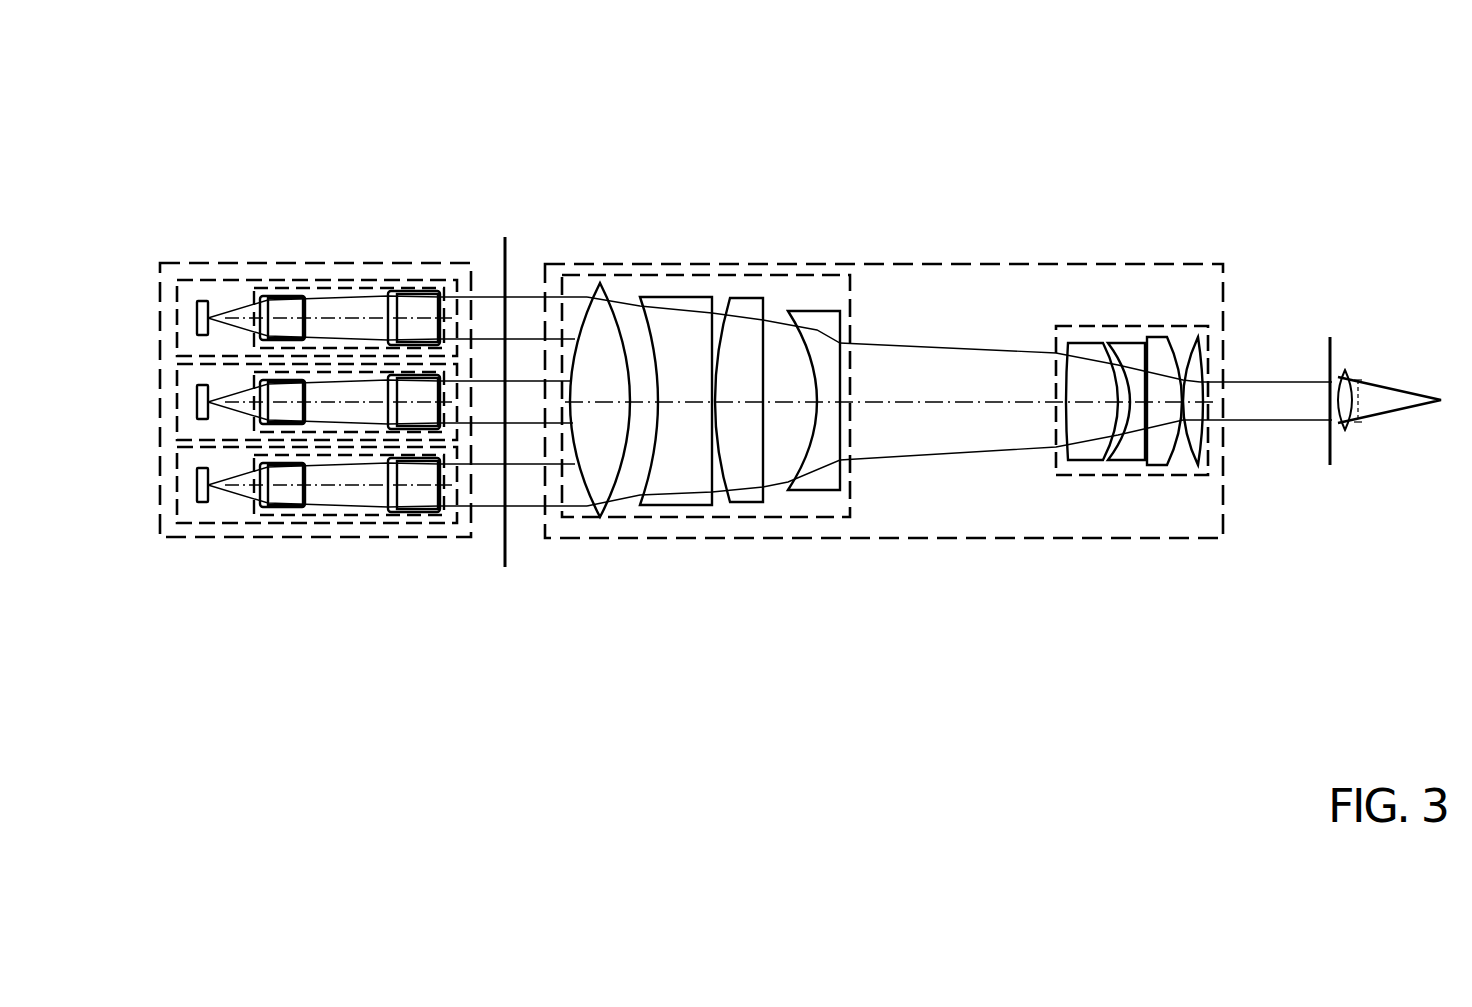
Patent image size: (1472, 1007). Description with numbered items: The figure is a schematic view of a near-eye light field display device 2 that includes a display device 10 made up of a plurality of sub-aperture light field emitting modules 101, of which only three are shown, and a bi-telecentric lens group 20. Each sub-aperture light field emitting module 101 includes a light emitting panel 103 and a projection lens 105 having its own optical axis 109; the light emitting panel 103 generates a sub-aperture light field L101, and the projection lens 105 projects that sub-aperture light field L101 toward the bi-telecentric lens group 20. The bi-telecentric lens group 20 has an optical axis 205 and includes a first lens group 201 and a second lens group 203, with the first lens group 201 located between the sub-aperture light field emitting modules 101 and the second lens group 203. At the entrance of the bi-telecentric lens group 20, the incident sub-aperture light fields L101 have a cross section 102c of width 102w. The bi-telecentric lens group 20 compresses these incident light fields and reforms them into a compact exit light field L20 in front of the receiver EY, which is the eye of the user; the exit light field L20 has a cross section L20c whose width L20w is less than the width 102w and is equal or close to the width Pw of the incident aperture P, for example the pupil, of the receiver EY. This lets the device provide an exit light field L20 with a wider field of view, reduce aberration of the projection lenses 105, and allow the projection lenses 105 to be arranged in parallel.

The near-eye light field display device 2 is at (143, 103).
The display device 10 is at (172, 262).
The sub-aperture light field emitting module 101 is at (177, 342).
The light emitting panel 103 is at (197, 318).
The projection lens 105 is at (254, 372).
The optical axis 109 is at (375, 316).
The width 102w is at (500, 352).
The cross section 102c is at (503, 543).
The sub-aperture light field L101 is at (547, 297).
The bi-telecentric lens group 20 is at (1050, 263).
The first lens group 201 is at (710, 274).
The optical axis 205 is at (918, 402).
The second lens group 203 is at (1148, 325).
The width L20w is at (1320, 395).
The cross section L20c is at (1320, 422).
The exit light field L20 is at (1341, 386).
The incident aperture P is at (1332, 436).
The width Pw is at (1388, 410).
The receiver EY is at (1387, 393).